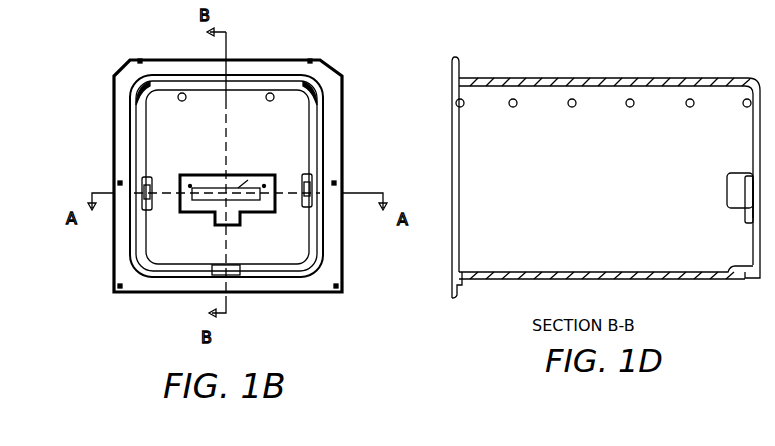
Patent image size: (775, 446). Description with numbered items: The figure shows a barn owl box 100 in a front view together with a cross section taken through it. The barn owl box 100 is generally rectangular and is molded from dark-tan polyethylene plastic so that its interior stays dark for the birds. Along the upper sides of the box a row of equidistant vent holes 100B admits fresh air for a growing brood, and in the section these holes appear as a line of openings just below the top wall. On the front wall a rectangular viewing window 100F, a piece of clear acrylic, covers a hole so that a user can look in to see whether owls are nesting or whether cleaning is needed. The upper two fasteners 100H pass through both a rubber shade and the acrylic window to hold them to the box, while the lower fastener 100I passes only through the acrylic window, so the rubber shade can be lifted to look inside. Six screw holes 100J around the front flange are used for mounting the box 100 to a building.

In FIG. 1D, the barn owl box 100 is at (505, 238).
In FIG. 1D, the vent holes 100B is at (508, 104).
In FIG. 1B, the viewing window 100F is at (248, 178).
In FIG. 1B, the fasteners 100H is at (185, 174).
In FIG. 1B, the lower fastener 100I is at (237, 225).
In FIG. 1B, the screw holes 100J is at (137, 57).